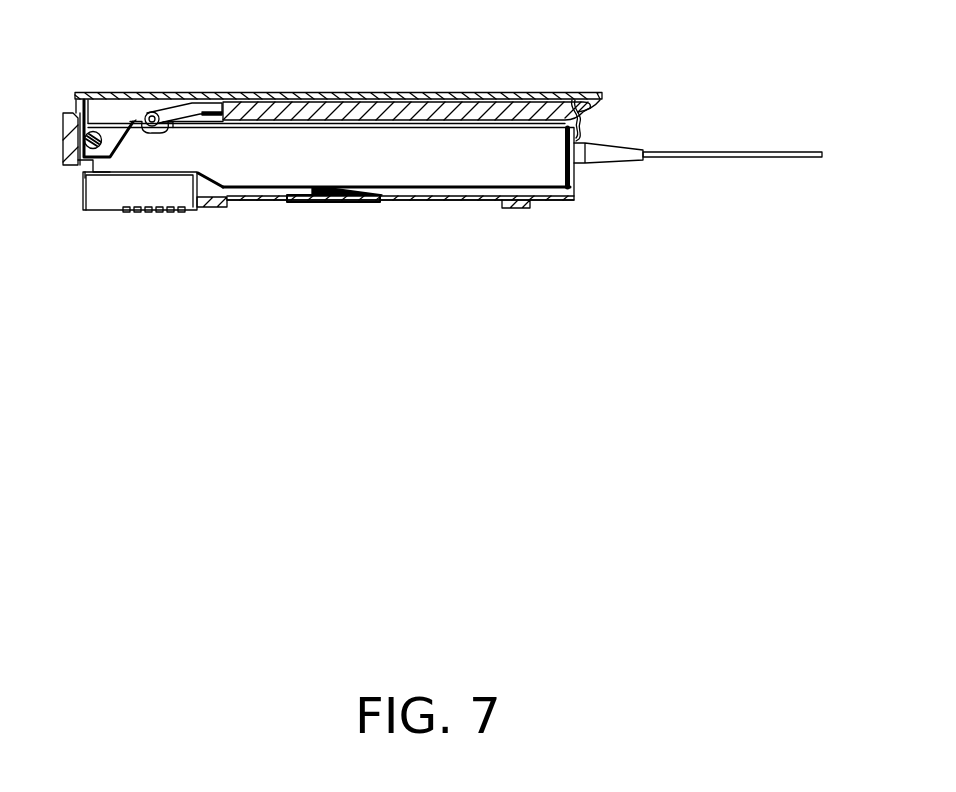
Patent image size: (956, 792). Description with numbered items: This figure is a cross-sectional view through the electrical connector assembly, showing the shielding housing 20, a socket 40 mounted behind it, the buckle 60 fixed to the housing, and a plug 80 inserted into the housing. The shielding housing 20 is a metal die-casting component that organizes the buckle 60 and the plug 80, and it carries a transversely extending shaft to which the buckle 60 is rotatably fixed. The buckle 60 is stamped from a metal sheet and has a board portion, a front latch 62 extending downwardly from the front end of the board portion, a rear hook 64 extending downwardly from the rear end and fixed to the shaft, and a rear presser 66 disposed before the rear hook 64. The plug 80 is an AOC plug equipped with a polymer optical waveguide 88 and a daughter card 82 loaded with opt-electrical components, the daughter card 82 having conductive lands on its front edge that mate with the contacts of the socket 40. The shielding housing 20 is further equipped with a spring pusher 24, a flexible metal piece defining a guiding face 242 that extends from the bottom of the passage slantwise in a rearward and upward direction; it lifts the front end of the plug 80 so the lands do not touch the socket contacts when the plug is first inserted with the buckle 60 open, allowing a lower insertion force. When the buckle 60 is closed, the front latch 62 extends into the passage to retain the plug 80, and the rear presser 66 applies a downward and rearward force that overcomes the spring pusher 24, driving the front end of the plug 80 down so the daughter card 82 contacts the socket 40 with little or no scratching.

The shielding housing 20 is at (420, 103).
The spring pusher 24 is at (307, 200).
The guiding face 242 is at (314, 194).
The socket 40 is at (118, 190).
The buckle 60 is at (367, 100).
The front latch 62 is at (596, 100).
The rear hook 64 is at (67, 113).
The rear presser 66 is at (151, 111).
The plug 80 is at (503, 157).
The daughter card 82 is at (200, 176).
The polymer optical waveguide 88 is at (680, 153).